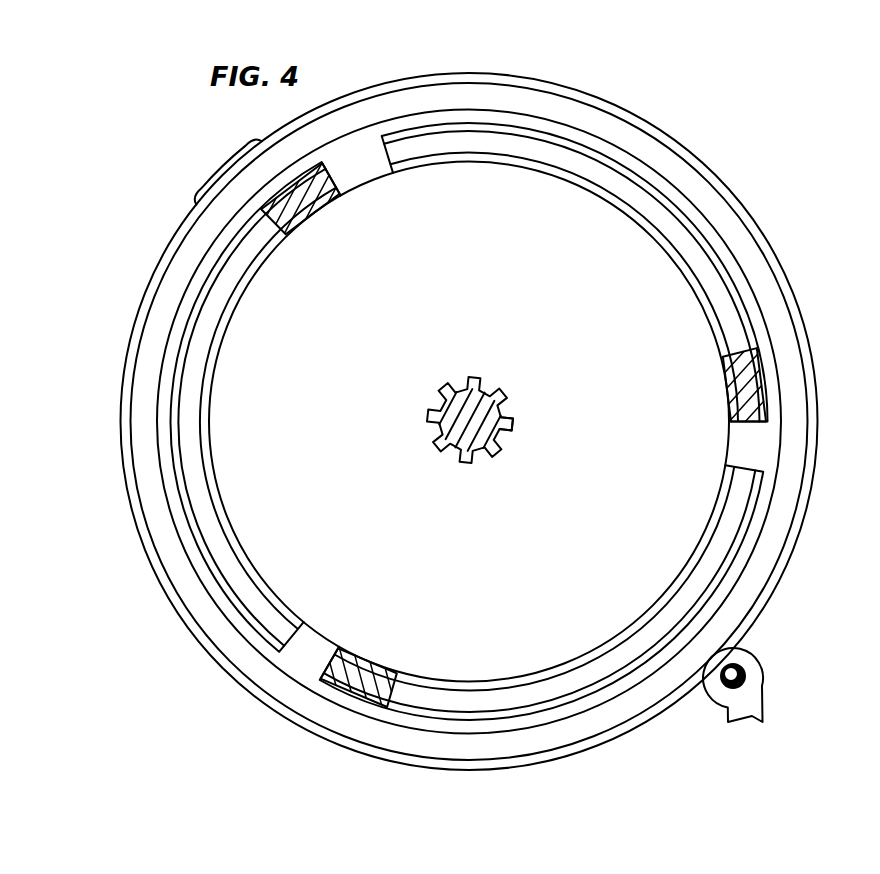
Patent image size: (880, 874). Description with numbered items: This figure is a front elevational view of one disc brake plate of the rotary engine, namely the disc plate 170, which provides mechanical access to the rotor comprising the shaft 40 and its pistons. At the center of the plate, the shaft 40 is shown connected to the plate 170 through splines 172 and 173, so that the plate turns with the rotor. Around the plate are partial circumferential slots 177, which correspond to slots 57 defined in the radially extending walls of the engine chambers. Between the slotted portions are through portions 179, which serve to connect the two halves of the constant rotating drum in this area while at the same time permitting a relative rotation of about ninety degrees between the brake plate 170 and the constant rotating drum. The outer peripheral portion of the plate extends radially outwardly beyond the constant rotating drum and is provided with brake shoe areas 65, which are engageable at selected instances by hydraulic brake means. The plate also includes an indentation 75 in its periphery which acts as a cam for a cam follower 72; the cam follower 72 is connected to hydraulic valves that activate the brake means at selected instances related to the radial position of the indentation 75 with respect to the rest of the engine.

The shaft 40 is at (489, 389).
The slots 57 is at (643, 203).
The brake shoe areas 65 is at (768, 288).
The cam follower 72 is at (750, 663).
The indentation 75 is at (228, 184).
The disc plate 170 is at (672, 292).
The spline 172 is at (513, 426).
The spline 173 is at (510, 413).
The partial circumferential slots 177 is at (612, 162).
The through portions 179 is at (308, 201).